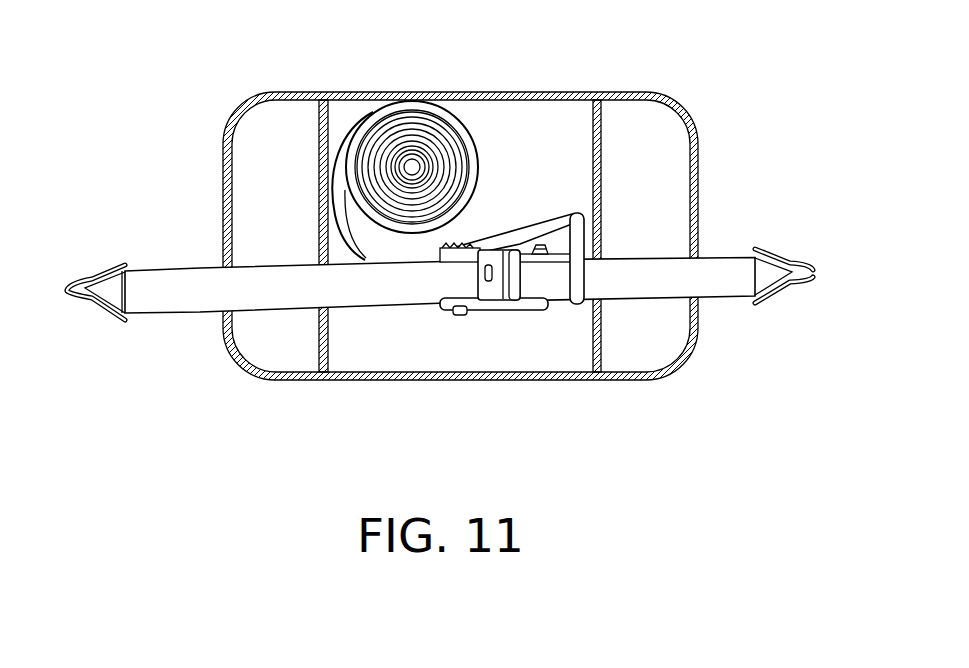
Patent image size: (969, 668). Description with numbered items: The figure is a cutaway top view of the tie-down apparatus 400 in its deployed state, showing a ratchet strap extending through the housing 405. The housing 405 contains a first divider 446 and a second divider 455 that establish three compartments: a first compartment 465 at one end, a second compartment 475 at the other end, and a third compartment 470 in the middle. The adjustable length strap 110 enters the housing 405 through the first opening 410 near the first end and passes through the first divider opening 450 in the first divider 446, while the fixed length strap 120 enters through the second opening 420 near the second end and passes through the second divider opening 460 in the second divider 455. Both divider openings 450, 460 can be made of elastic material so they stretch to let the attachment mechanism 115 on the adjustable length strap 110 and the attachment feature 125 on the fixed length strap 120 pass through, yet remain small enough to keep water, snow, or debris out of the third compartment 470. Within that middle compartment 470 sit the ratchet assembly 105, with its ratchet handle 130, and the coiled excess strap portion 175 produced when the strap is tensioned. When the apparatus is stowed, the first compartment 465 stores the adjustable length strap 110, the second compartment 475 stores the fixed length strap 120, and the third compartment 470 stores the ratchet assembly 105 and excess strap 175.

The tie-down apparatus 400 is at (434, 232).
The housing 405 is at (697, 157).
The first divider 446 is at (322, 128).
The second divider 455 is at (602, 343).
The first compartment 465 is at (263, 197).
The third compartment 470 is at (398, 337).
The second compartment 475 is at (657, 335).
The first divider opening 450 is at (318, 312).
The second divider opening 460 is at (590, 302).
The first opening 410 is at (225, 267).
The second opening 420 is at (696, 253).
The excess strap portion 175 is at (427, 122).
The adjustable length strap 110 is at (188, 310).
The fixed length strap 120 is at (712, 288).
The attachment mechanism 115 is at (68, 296).
The attachment feature 125 is at (805, 283).
The ratchet handle 130 is at (553, 240).
The ratchet assembly 105 is at (494, 334).